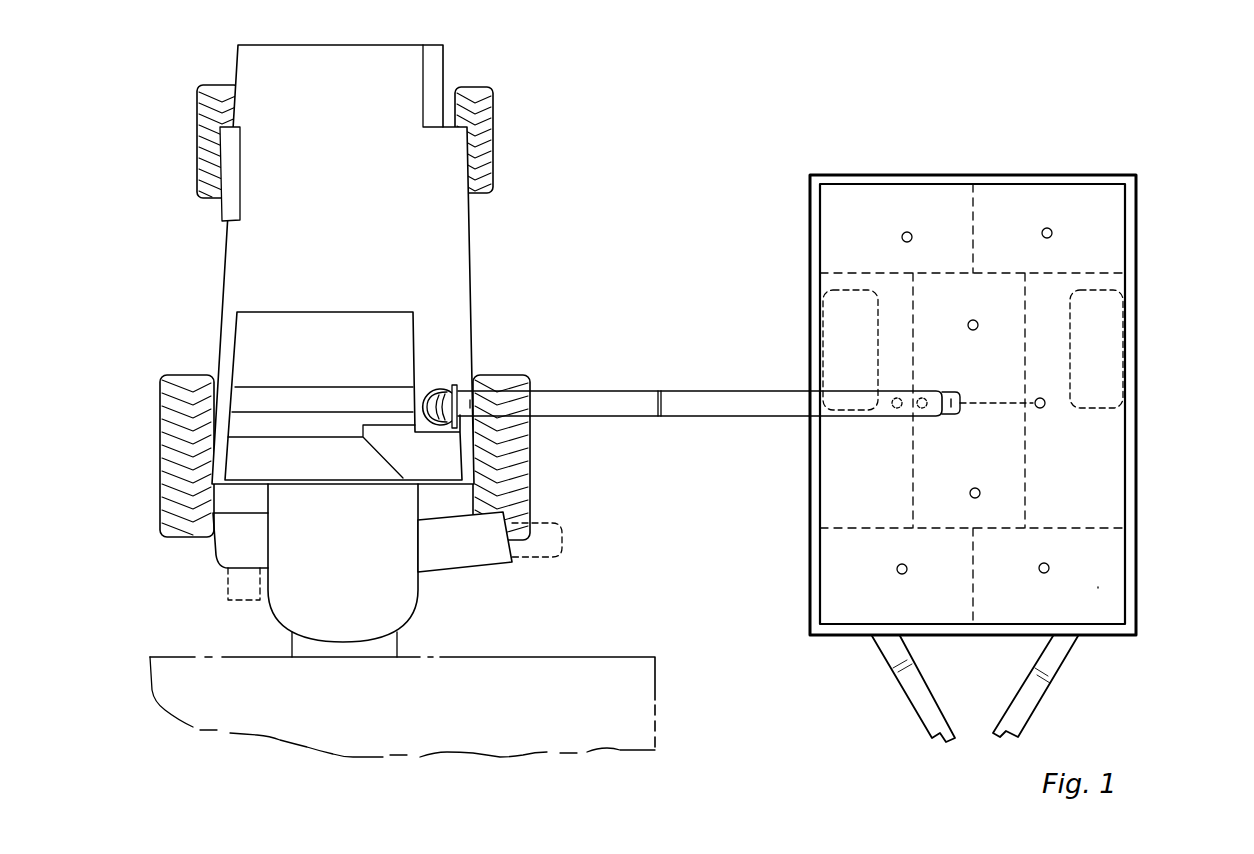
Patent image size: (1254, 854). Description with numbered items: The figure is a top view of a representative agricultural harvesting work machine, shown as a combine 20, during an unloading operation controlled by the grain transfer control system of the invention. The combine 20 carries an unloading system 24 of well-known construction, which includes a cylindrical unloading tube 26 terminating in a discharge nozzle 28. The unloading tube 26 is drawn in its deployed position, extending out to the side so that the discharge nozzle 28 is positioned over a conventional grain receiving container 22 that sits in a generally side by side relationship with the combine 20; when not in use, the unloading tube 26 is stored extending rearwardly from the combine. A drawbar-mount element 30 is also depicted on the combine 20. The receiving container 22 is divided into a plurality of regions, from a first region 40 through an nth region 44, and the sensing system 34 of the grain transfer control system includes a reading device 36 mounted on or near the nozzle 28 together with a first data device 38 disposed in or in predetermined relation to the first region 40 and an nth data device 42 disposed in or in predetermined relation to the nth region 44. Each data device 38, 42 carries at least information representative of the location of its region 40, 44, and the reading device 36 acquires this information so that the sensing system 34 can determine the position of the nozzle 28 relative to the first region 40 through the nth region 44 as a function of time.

The combine 20 is at (402, 394).
The grain receiving container 22 is at (1025, 421).
The unloading system 24 is at (592, 462).
The unloading tube 26 is at (722, 418).
The discharge nozzle 28 is at (953, 418).
The drawbar mount / cab platform 30 is at (332, 387).
The sensing system 34 is at (1092, 480).
The reading device 36 is at (918, 389).
The first data device 38 is at (1037, 568).
The first region 40 is at (1098, 587).
The nth data device 42 is at (912, 235).
The nth region 44 is at (858, 213).